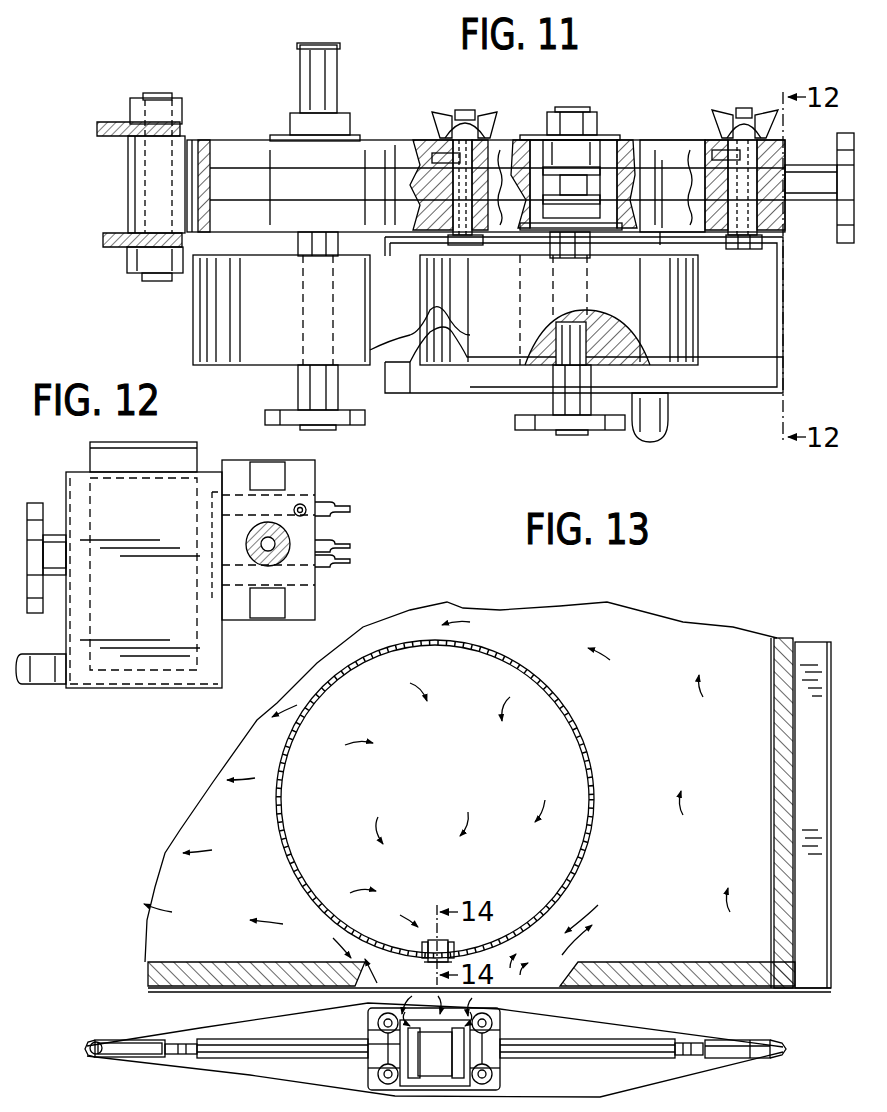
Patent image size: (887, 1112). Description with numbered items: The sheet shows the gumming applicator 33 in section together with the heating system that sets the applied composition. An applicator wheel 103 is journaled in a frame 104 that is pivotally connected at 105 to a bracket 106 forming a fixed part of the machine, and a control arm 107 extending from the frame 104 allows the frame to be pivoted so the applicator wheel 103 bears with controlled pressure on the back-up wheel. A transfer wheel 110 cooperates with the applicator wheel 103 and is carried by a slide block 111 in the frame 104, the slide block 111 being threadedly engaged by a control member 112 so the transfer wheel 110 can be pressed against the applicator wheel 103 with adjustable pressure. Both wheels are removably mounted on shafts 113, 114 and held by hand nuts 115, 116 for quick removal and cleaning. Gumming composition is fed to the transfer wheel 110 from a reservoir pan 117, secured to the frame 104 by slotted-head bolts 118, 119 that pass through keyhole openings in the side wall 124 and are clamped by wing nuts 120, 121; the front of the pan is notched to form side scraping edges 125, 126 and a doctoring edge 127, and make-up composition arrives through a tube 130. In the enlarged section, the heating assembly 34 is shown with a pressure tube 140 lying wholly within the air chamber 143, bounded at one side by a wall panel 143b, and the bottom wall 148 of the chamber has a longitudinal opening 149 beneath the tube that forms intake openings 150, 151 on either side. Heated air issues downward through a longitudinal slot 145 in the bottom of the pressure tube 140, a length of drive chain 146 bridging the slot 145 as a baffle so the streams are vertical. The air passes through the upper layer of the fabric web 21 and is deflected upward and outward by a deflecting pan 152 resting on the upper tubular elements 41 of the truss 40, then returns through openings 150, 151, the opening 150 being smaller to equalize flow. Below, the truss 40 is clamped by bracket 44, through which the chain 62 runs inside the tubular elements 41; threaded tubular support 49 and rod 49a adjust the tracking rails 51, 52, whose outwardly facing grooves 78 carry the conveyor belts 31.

In FIG. 13, the web of tubular knitted fabric 21 is at (603, 1086).
In FIG. 13, the elongated belts 31 is at (787, 1048).
In FIG. 11, the applicator 33 is at (595, 105).
In FIG. 13, the enclosure 34 is at (604, 598).
In FIG. 13, the truss 40 is at (520, 1058).
In FIG. 13, the tubular elements 41 is at (377, 1076).
In FIG. 13, the clamping bracket 44 is at (372, 1048).
In FIG. 13, the tubular support 49 is at (621, 1041).
In FIG. 13, the adjustable supporting rod 49a is at (689, 1039).
In FIG. 13, the tracking rail 51 is at (137, 1039).
In FIG. 13, the tracking rail 52 is at (736, 1039).
In FIG. 13, the chain 62 is at (376, 1024).
In FIG. 13, the outwardly facing grooves 78 is at (100, 1042).
In FIG. 11, the applicator wheel 103 is at (215, 316).
In FIG. 11, the frame 104 is at (383, 161).
In FIG. 12, the frame 104 is at (290, 465).
In FIG. 11, the pivotal connection 105 is at (160, 282).
In FIG. 11, the bracket 106 is at (113, 238).
In FIG. 11, the control arm 107 is at (204, 157).
In FIG. 11, the transfer wheel 110 is at (675, 305).
In FIG. 12, the transfer wheel 110 is at (168, 456).
In FIG. 11, the slide block 111 is at (628, 158).
In FIG. 11, the control member 112 is at (807, 188).
In FIG. 12, the control member 112 is at (280, 552).
In FIG. 11, the shaft 113 is at (302, 244).
In FIG. 11, the shaft 114 is at (585, 244).
In FIG. 11, the hand nut 115 is at (360, 418).
In FIG. 11, the hand nut 116 is at (590, 430).
In FIG. 12, the hand nut 116 is at (43, 505).
In FIG. 11, the reservoir pan 117 is at (748, 392).
In FIG. 12, the reservoir pan 117 is at (140, 677).
In FIG. 11, the slotted-head bolt 118 is at (472, 240).
In FIG. 12, the slotted-head bolt 118 is at (342, 545).
In FIG. 11, the slotted-head bolt 119 is at (746, 252).
In FIG. 12, the slotted-head bolt 119 is at (331, 510).
In FIG. 11, the wing nut 120 is at (479, 129).
In FIG. 12, the wing nut 120 is at (321, 565).
In FIG. 11, the wing nut 121 is at (708, 138).
In FIG. 12, the wing nut 121 is at (340, 520).
In FIG. 11, the side wall 124 is at (661, 238).
In FIG. 11, the side scraping edge 125 is at (405, 258).
In FIG. 11, the side scraping edge 126 is at (420, 373).
In FIG. 11, the doctoring edge 127 is at (435, 346).
In FIG. 11, the tube 130 is at (670, 430).
In FIG. 12, the tube 130 is at (37, 680).
In FIG. 13, the pressure tube 140 is at (281, 802).
In FIG. 13, the air chamber 143 is at (681, 639).
In FIG. 13, the wall panel 143b is at (796, 643).
In FIG. 13, the longitudinal slot 145 is at (430, 963).
In FIG. 13, the drive chain 146 is at (445, 942).
In FIG. 13, the bottom wall 148 is at (232, 962).
In FIG. 13, the longitudinal opening 149 is at (514, 982).
In FIG. 13, the intake opening 150 is at (325, 941).
In FIG. 13, the intake opening 151 is at (601, 907).
In FIG. 13, the deflecting pan 152 is at (430, 1044).